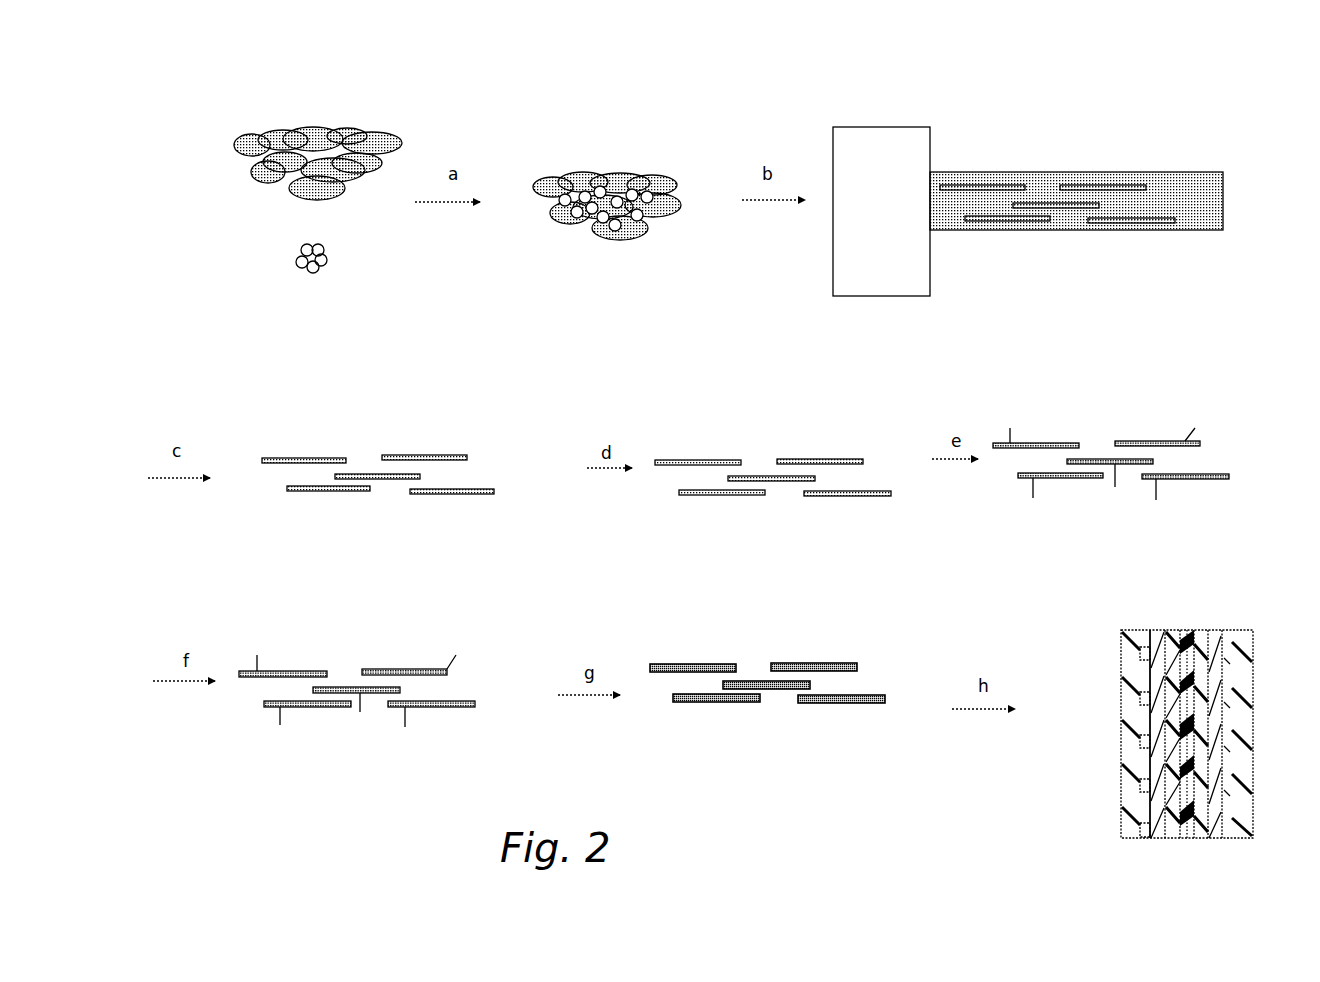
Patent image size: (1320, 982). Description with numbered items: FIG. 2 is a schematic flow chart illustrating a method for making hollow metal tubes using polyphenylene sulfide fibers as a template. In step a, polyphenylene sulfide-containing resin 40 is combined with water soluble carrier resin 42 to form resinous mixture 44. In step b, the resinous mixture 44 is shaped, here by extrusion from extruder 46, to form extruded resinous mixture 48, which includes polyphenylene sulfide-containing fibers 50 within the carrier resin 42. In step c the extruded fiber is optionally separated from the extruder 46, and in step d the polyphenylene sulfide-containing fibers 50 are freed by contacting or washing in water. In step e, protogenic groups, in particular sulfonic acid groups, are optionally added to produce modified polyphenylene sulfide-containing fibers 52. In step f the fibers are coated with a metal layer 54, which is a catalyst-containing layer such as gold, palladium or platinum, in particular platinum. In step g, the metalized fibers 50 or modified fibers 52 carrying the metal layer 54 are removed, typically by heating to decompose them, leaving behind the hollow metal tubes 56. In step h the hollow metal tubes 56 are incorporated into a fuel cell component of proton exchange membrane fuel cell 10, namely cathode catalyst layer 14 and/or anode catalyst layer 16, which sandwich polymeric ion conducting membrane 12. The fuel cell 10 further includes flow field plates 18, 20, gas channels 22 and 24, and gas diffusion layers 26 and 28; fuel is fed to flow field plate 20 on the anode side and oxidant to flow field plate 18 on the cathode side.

The proton exchange membrane fuel cell 10 is at (1090, 630).
The polymeric ion conducting membrane 12 is at (1187, 630).
The cathode catalyst layer 14 is at (1173, 636).
The anode catalyst layer 16 is at (1200, 636).
The flow field plate 18 is at (1138, 640).
The flow field plate 20 is at (1230, 640).
The gas channels 22 is at (1140, 652).
The gas channels 24 is at (1232, 640).
The gas diffusion layer 26 is at (1158, 635).
The gas diffusion layer 28 is at (1214, 640).
The polyphenylene sulfide-containing resin 40 is at (295, 262).
The water soluble carrier resin 42 is at (245, 133).
The resinous mixture 44 is at (618, 175).
The extruder 46 is at (833, 235).
The extruded resinous mixture 48 is at (1140, 100).
The polyphenylene sulfide-containing fibers 50 is at (1110, 185).
The modified polyphenylene sulfide-containing fibers 52 is at (1055, 443).
The metal layer 54 is at (463, 700).
The hollow metal tubes 56 is at (710, 664).